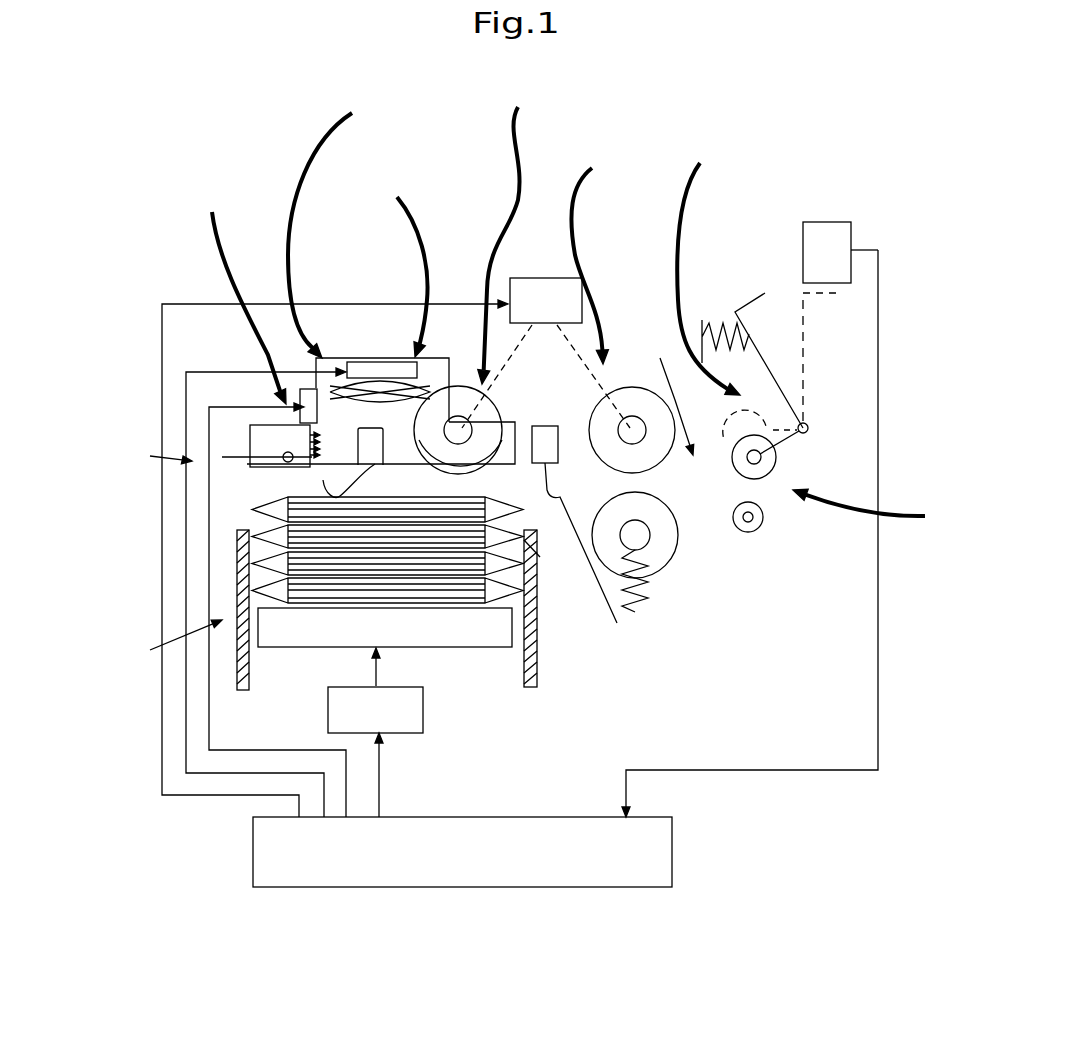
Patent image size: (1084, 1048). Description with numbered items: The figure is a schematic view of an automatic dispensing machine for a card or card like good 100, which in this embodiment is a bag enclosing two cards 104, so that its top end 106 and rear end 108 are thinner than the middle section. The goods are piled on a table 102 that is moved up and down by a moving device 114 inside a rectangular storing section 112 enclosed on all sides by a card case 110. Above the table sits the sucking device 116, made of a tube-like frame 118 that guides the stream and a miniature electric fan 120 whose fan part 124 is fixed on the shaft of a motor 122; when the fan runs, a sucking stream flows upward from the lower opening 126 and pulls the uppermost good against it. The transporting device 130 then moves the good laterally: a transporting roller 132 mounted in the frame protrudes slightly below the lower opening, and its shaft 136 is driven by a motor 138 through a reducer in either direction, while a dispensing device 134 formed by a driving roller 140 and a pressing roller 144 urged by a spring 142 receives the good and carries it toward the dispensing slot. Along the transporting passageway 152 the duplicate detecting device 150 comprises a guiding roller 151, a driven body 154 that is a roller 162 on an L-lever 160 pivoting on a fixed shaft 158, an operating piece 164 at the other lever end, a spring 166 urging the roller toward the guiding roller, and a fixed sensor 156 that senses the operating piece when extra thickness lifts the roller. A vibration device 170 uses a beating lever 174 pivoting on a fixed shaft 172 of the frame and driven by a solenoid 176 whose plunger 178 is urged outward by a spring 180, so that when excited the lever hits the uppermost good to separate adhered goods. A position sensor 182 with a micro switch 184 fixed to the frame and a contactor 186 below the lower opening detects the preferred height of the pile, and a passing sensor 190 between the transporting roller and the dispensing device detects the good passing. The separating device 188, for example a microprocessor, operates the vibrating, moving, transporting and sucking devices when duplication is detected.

The card or card like good 100 is at (155, 648).
The table 102 is at (490, 648).
The cards 104 is at (287, 588).
The top end 106 is at (540, 557).
The rear end 108 is at (283, 498).
The card case 110 is at (540, 684).
The storing section 112 is at (277, 660).
The moving device 114 is at (423, 718).
The sucking device 116 is at (346, 225).
The frame 118 is at (513, 424).
The electric fan 120 is at (382, 296).
The motor 122 is at (388, 385).
The fan part 124 is at (330, 363).
The lower opening 126 is at (449, 356).
The transporting device 130 is at (525, 231).
The transporting roller 132 is at (467, 383).
The dispensing device 134 is at (589, 266).
The shaft 136 is at (472, 420).
The motor 138 is at (545, 280).
The driving roller 140 is at (627, 385).
The spring 142 is at (642, 602).
The pressing roller 144 is at (672, 560).
The duplicate detecting device 150 is at (716, 266).
The guiding roller 151 is at (764, 521).
The transporting passageway 152 is at (660, 387).
The driven body 154 is at (877, 498).
The sensor 156 is at (826, 222).
The fixed shaft 158 is at (808, 430).
The L-lever 160 is at (778, 381).
The roller 162 is at (765, 470).
The operating piece 164 is at (752, 300).
The spring 166 is at (714, 325).
The vibration device 170 is at (232, 293).
The fixed shaft 172 is at (302, 443).
The beating lever 174 is at (310, 450).
The solenoid 176 is at (299, 388).
The plunger 178 is at (300, 420).
The spring 180 is at (252, 426).
The position sensor 182 is at (135, 453).
The micro switch 184 is at (365, 463).
The contactor 186 is at (323, 480).
The separating device 188 is at (465, 817).
The passing sensor 190 is at (602, 562).